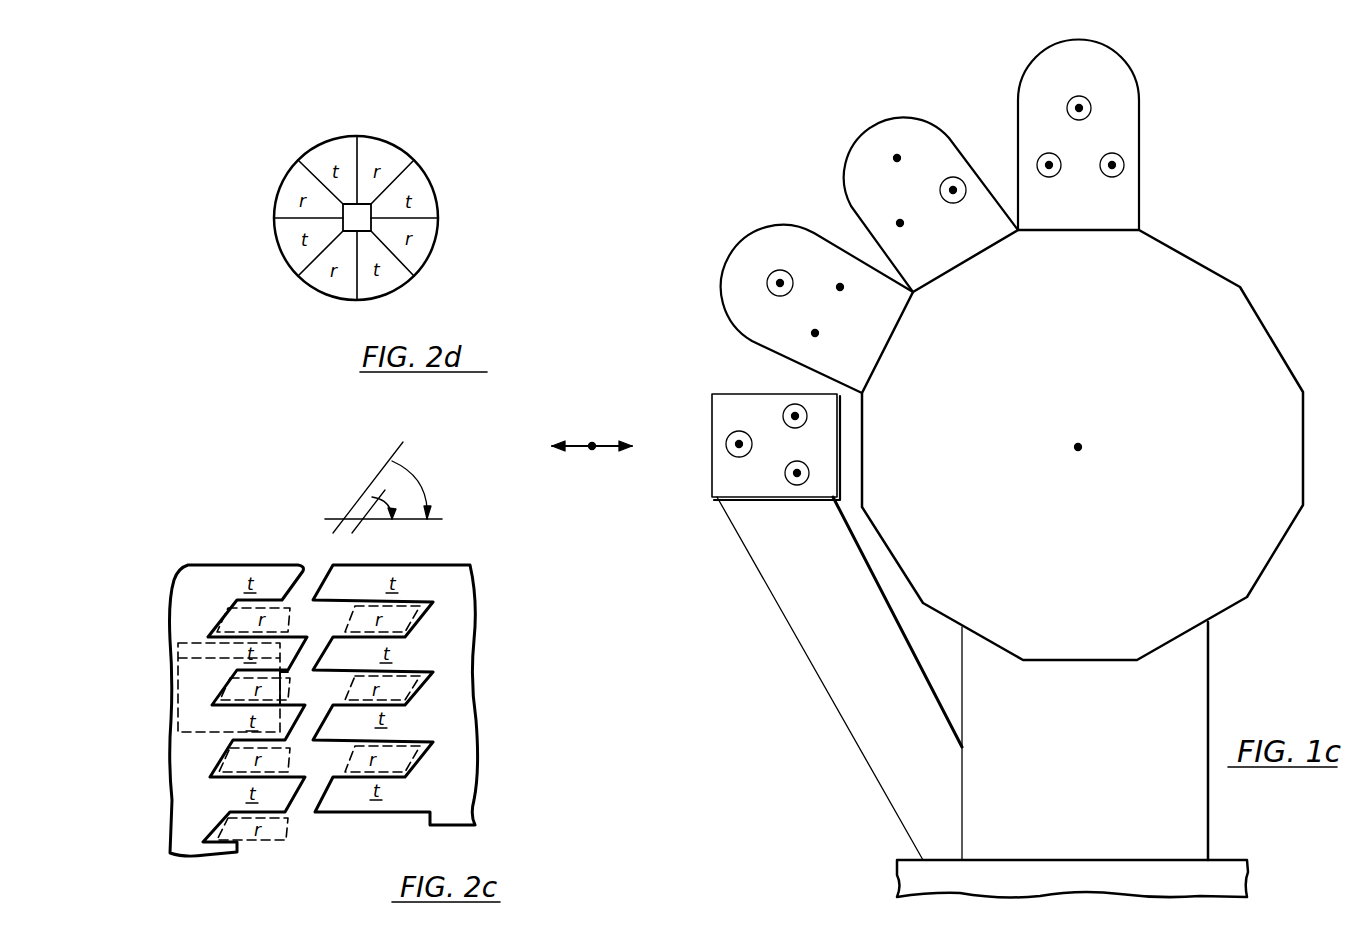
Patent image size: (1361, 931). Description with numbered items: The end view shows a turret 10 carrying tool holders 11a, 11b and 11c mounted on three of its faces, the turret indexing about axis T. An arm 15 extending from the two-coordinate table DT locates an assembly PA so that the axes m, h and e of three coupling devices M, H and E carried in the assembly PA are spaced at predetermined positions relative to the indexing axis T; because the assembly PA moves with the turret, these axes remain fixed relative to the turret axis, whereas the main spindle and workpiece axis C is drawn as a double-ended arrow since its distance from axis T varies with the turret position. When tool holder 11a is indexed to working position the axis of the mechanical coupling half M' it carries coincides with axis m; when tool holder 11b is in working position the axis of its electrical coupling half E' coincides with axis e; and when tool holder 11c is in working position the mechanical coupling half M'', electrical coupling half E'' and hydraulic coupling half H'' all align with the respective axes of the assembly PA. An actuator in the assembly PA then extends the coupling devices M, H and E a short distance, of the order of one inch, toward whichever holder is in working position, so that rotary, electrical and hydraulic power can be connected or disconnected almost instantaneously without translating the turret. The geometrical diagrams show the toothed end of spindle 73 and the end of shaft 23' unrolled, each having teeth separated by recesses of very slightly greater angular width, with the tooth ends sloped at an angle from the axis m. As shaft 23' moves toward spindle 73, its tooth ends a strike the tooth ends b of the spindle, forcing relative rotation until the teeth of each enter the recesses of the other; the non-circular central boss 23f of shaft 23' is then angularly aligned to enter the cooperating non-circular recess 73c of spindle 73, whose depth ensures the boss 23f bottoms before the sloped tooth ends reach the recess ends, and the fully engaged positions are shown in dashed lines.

In FIG. 1c, the turret 10 is at (1255, 310).
In FIG. 1c, the tool holder 11a is at (794, 299).
In FIG. 1c, the tool holder 11b is at (903, 199).
In FIG. 1c, the tool holder 11c is at (1118, 134).
In FIG. 1c, the arm 15 is at (798, 640).
In FIG. 1c, the assembly PA is at (738, 447).
In FIG. 1c, the two-coordinate table DT is at (897, 870).
In FIG. 1c, the indexing axis T is at (1078, 447).
In FIG. 1c, the main spindle and workpiece axis C is at (592, 446).
In FIG. 1c, the mechanical coupling device M is at (734, 442).
In FIG. 1c, the electrical coupling device E is at (793, 427).
In FIG. 1c, the hydraulic coupling device H is at (792, 472).
In FIG. 1c, the mechanical coupling half M' is at (770, 281).
In FIG. 1c, the electrical coupling half E' is at (942, 181).
In FIG. 1c, the mechanical coupling half M'' is at (1058, 92).
In FIG. 1c, the hydraulic coupling half H'' is at (1054, 171).
In FIG. 1c, the electrical coupling half E'' is at (1106, 168).
In FIG. 2c, the spindle 73 is at (205, 566).
In FIG. 2d, the non-circular recess 73c is at (291, 267).
In FIG. 2c, the non-circular recess 73c is at (225, 676).
In FIG. 2c, the shaft 23' is at (421, 684).
In FIG. 2d, the non-circular central boss 23f is at (358, 234).
In FIG. 2c, the non-circular central boss 23f is at (296, 690).
In FIG. 2c, the tooth ends a is at (334, 728).
In FIG. 2c, the tooth ends b is at (310, 850).
In FIG. 2c, the axis m is at (382, 519).